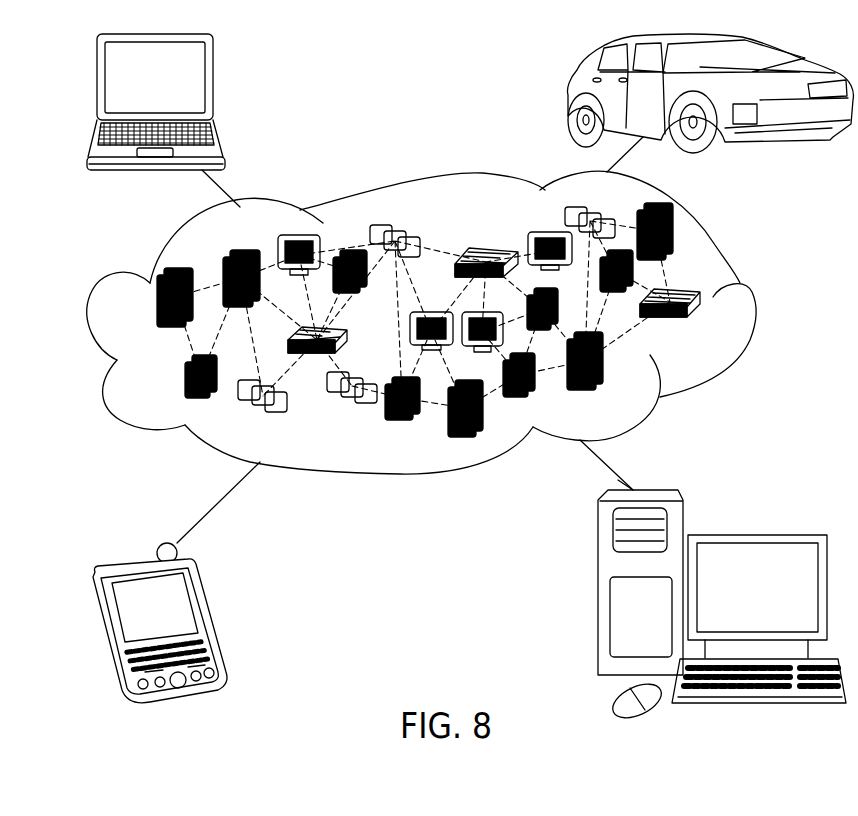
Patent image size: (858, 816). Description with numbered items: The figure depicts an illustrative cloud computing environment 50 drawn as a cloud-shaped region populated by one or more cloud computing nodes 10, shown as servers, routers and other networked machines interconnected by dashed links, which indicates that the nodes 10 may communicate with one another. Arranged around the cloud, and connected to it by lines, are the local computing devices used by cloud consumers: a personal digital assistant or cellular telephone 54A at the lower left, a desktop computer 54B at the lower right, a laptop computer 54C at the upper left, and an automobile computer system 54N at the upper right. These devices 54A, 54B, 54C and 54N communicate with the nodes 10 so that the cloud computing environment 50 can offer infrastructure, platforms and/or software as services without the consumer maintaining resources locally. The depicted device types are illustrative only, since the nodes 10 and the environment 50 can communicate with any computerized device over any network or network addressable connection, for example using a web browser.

The cloud computing node 10 is at (702, 325).
The cloud computing environment 50 is at (756, 298).
The personal digital assistant or cellular telephone 54A is at (213, 618).
The desktop computer 54B is at (752, 533).
The laptop computer 54C is at (213, 84).
The automobile computer system 54N is at (570, 93).